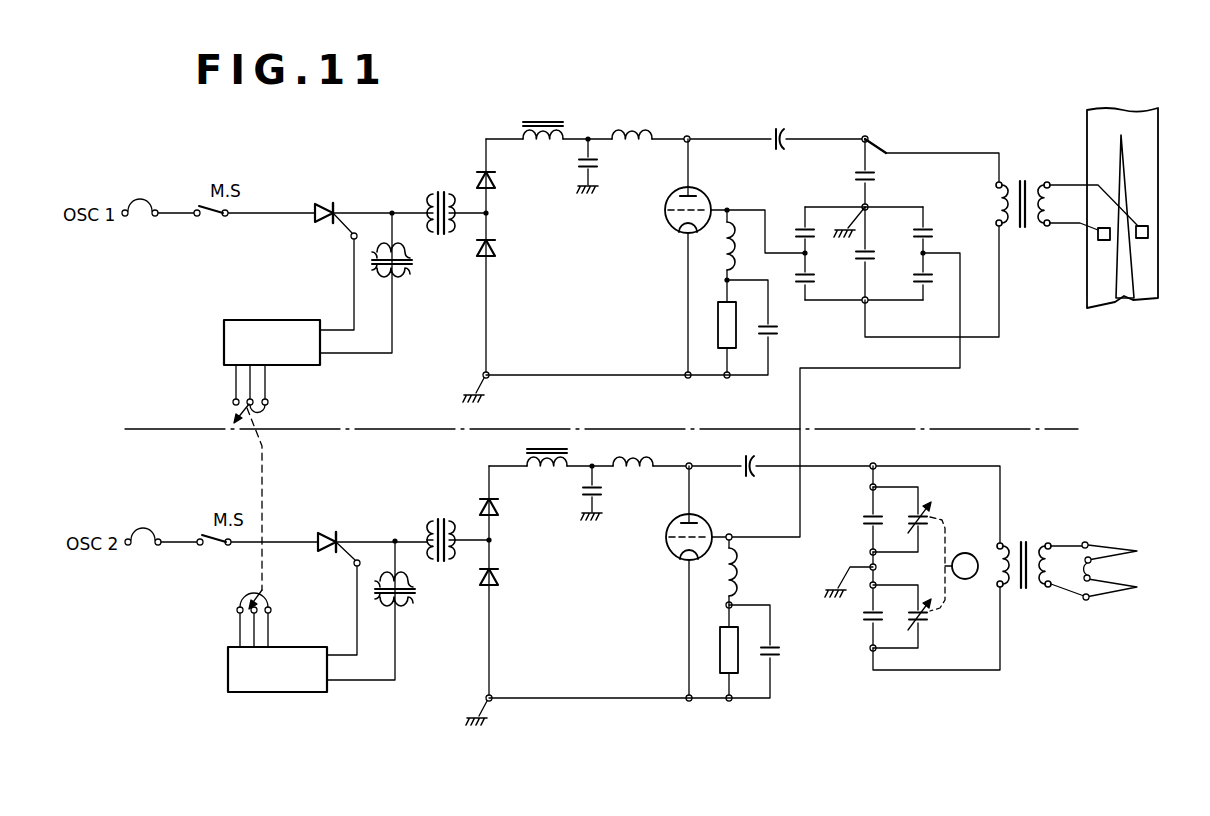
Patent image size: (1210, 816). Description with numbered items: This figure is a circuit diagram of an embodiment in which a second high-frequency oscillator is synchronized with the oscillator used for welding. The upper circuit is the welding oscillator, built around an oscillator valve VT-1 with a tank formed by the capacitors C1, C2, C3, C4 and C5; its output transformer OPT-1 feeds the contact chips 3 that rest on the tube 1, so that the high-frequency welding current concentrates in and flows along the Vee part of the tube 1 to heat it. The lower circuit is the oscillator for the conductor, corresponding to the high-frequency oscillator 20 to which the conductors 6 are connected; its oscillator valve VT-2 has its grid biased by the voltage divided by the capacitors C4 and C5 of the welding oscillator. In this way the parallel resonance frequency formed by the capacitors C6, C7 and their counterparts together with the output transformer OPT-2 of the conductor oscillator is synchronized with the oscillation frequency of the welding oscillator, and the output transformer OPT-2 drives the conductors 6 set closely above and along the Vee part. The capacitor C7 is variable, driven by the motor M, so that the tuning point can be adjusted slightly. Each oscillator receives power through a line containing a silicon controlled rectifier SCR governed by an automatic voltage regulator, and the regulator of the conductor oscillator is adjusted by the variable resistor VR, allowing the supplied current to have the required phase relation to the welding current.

The tube 1 is at (1148, 161).
The contact chip 3 is at (1096, 246).
The conductor 6 is at (1114, 544).
The high-frequency oscillator 20 is at (878, 145).
The oscillator valve VT-1 is at (701, 257).
The oscillator valve VT-2 is at (701, 582).
The output transformer OPT-1 is at (1024, 193).
The output transformer OPT-2 is at (1026, 554).
The capacitor C1 is at (878, 173).
The capacitor C2 is at (795, 281).
The capacitor C3 is at (795, 230).
The capacitor C4 is at (933, 281).
The capacitor C5 is at (933, 230).
The capacitor C6 is at (861, 569).
The variable capacitor C7 is at (914, 569).
The motor M is at (961, 566).
The silicon controlled rectifier SCR is at (330, 206).
The variable resistor VR is at (268, 598).